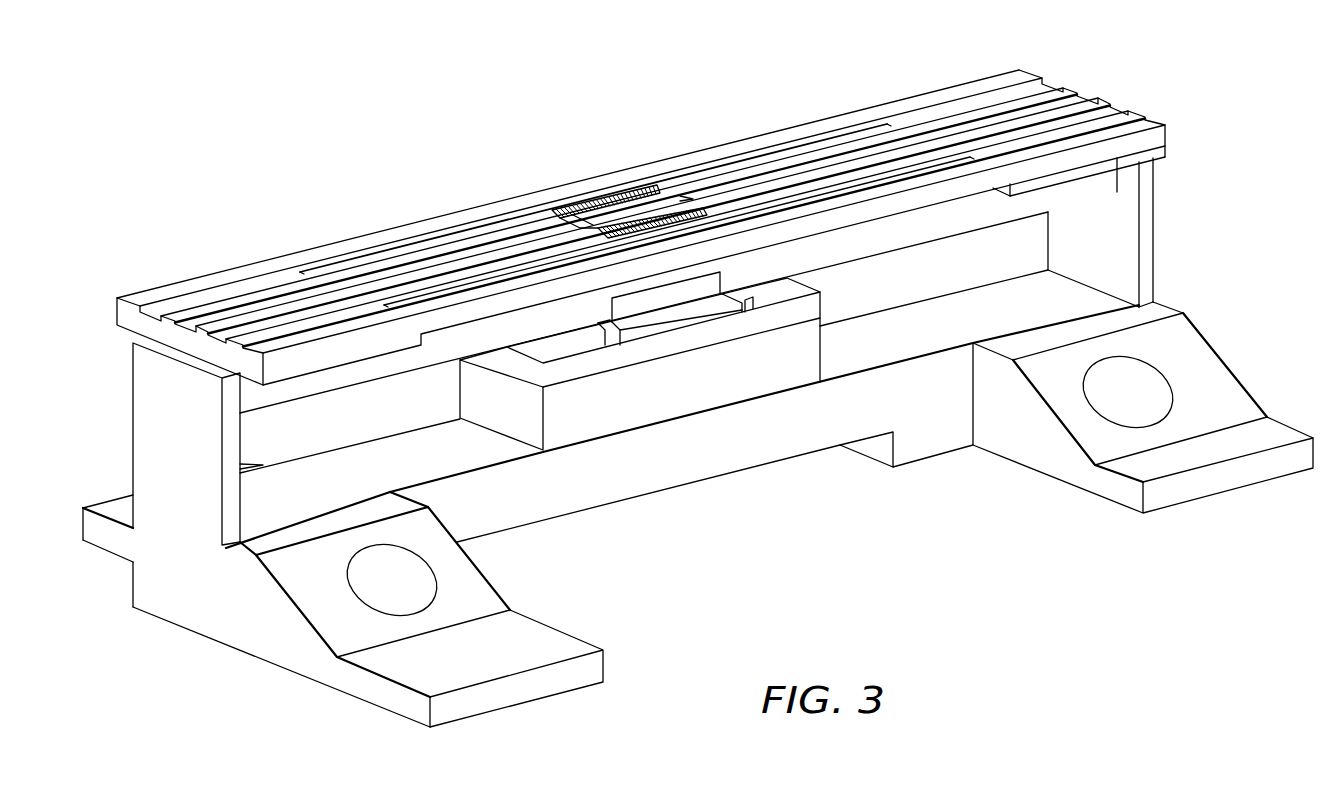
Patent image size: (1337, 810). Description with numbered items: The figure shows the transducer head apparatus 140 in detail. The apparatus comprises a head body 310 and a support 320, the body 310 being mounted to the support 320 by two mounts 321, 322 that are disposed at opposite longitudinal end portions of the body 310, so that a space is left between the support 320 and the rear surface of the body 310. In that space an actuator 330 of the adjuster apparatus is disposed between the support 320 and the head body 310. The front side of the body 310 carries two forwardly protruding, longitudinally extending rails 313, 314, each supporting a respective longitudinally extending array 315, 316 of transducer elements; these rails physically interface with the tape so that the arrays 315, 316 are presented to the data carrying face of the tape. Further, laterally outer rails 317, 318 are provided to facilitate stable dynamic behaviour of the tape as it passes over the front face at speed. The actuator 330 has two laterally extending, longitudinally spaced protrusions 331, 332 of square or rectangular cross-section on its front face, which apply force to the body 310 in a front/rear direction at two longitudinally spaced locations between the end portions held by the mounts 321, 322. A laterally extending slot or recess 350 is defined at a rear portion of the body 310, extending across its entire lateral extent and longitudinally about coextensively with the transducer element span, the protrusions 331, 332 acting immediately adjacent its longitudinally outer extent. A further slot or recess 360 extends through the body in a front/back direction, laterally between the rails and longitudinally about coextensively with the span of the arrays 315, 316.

The transducer head apparatus 140 is at (1253, 338).
The head body 310 is at (641, 249).
The rail 313 is at (757, 162).
The rail 314 is at (842, 170).
The array of transducer elements 315 is at (623, 190).
The array of transducer elements 316 is at (677, 203).
The laterally outer rail 317 is at (270, 263).
The laterally outer rail 318 is at (287, 345).
The support 320 is at (1242, 405).
The mount 321 is at (1155, 247).
The mount 322 is at (142, 428).
The actuator 330 is at (555, 373).
The protrusion 331 is at (612, 340).
The protrusion 332 is at (743, 305).
The slot or recess 350 is at (667, 288).
The slot or recess 360 is at (602, 183).